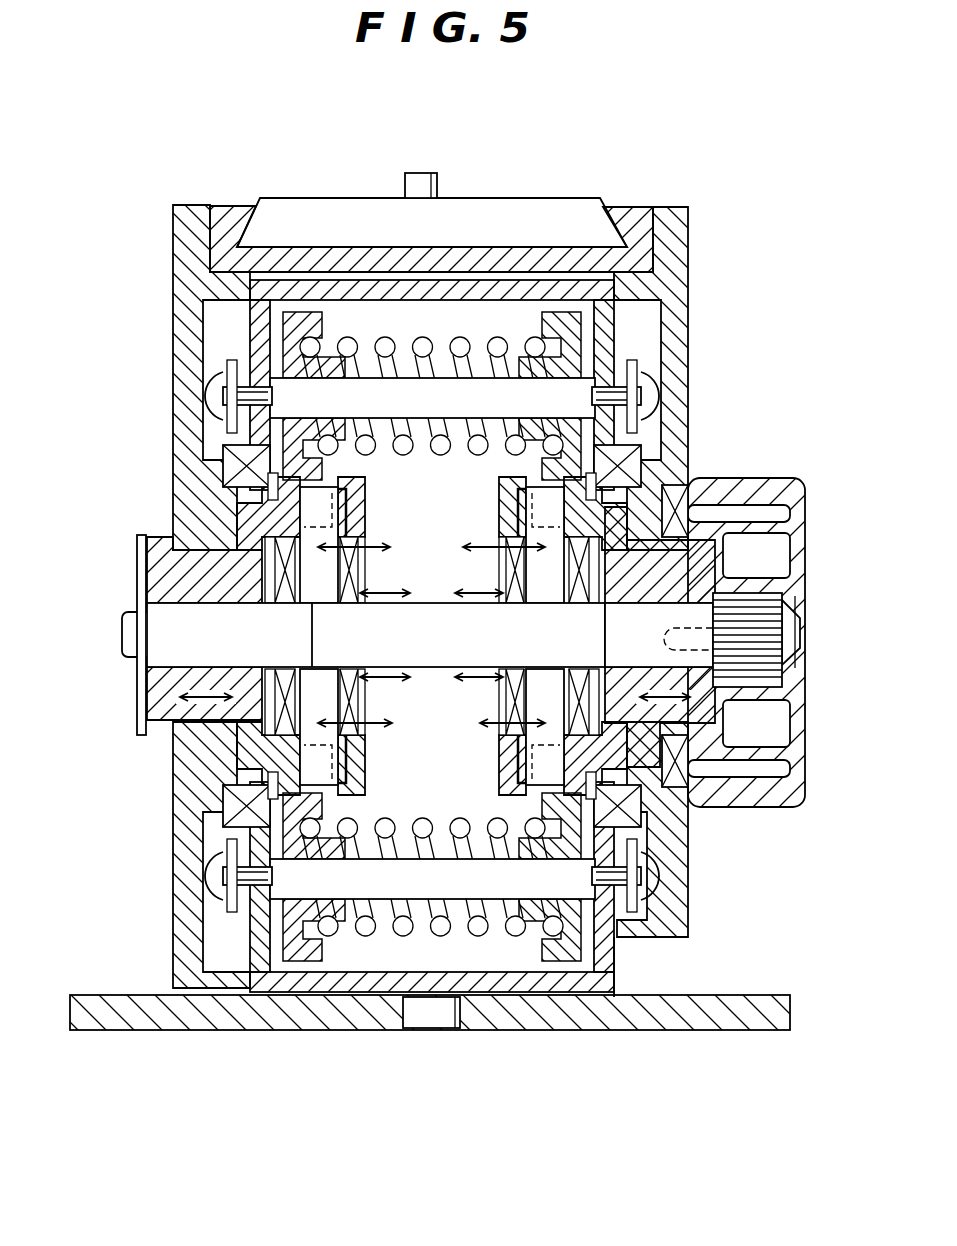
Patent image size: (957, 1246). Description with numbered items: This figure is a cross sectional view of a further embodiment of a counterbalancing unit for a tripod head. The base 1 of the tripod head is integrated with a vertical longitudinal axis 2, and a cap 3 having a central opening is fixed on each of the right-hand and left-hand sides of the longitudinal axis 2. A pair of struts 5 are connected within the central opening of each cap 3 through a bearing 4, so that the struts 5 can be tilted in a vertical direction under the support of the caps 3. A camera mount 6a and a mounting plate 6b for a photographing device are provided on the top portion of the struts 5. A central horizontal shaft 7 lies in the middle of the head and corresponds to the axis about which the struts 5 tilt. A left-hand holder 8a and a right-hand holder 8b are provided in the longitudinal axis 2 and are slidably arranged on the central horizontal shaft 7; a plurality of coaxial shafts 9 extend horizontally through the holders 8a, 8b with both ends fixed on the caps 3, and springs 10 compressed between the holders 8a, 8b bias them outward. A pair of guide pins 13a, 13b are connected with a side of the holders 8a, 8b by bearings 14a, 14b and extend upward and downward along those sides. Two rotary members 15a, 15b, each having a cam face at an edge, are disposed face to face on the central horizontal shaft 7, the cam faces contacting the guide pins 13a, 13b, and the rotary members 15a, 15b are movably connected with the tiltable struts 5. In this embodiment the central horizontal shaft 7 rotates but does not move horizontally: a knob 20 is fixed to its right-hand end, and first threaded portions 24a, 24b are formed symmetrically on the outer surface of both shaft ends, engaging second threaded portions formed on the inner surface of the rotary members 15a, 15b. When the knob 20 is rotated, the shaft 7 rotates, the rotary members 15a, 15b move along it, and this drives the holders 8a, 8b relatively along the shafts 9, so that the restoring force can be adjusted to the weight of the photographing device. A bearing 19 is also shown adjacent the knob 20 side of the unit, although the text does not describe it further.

The base 1 is at (596, 1012).
The longitudinal axis 2 is at (513, 288).
The cap 3 is at (262, 318).
The bearing 4 is at (232, 466).
The struts 5 is at (200, 360).
The camera mount 6a is at (468, 258).
The mounting plate 6b is at (570, 215).
The central horizontal shaft 7 is at (330, 639).
The left-hand holder 8a is at (240, 398).
The right-hand holder 8b is at (610, 395).
The coaxial shafts 9 is at (326, 390).
The springs 10 is at (386, 347).
The guide pin 13a is at (322, 502).
The guide pin 13b is at (542, 502).
The bearing 14a is at (352, 585).
The bearing 14b is at (515, 585).
The rotary member 15a is at (245, 532).
The rotary member 15b is at (668, 480).
The bearing 19 is at (676, 505).
The knob 20 is at (805, 525).
The first threaded portion 24a is at (167, 590).
The first threaded portion 24b is at (705, 592).